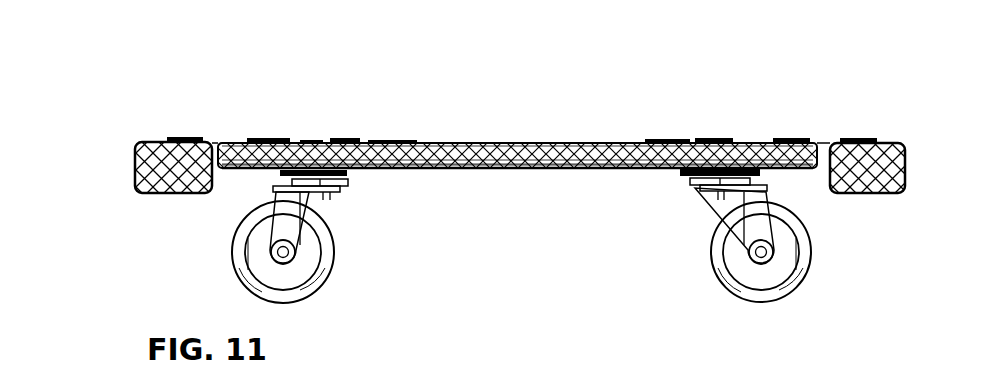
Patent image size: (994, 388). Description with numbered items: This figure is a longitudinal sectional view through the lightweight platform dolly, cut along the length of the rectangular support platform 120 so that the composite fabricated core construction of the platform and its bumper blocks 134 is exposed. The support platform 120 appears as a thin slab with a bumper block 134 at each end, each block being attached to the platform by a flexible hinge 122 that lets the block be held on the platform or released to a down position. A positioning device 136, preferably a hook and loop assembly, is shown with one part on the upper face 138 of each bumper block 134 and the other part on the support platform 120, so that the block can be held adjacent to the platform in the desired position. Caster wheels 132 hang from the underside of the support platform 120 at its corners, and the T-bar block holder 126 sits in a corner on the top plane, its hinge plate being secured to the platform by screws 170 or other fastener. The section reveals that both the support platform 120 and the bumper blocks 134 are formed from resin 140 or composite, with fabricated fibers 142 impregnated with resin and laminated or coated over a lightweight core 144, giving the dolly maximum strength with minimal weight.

The support platform 120 is at (537, 141).
The flexible hinge 122 is at (218, 142).
The T-bar block holder 126 is at (350, 140).
The caster wheel 132 is at (231, 255).
The bumper block 134 is at (137, 168).
The positioning device 136 is at (167, 137).
The upper face 138 is at (183, 100).
The resin 140 is at (433, 170).
The fabricated fibers 142 is at (470, 170).
The lightweight core 144 is at (487, 170).
The screws 170 is at (357, 188).